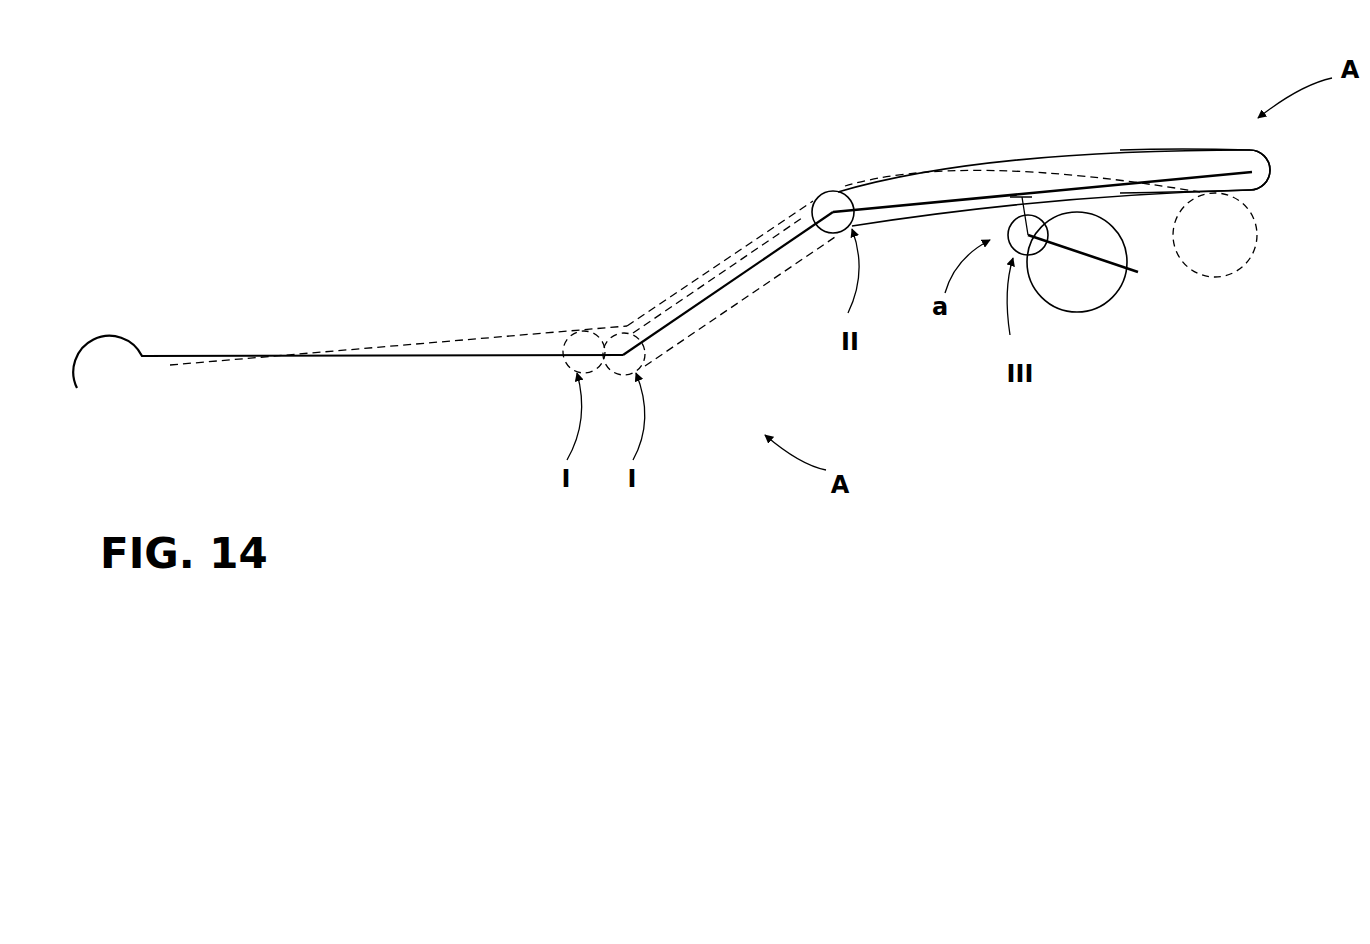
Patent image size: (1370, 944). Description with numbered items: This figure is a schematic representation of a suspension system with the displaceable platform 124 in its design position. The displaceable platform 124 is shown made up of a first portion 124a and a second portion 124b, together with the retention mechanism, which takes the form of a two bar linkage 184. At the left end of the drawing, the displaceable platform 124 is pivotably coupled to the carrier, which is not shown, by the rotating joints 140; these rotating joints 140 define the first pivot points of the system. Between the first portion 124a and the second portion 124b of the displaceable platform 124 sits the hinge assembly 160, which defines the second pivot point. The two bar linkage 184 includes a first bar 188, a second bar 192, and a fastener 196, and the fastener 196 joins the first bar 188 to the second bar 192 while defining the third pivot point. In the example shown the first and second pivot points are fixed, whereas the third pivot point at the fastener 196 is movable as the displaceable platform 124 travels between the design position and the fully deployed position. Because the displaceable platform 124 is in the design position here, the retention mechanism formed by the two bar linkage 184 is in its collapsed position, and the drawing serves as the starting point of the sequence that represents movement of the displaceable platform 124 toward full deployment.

The displaceable platform 124 is at (927, 170).
The first portion of the displaceable platform 124a is at (712, 270).
The second portion of the displaceable platform 124b is at (1170, 150).
The rotating joints 140 is at (582, 338).
The hinge assembly 160 is at (833, 212).
The two bar linkage 184 is at (1075, 268).
The first bar 188 is at (1139, 273).
The second bar 192 is at (1030, 214).
The fastener 196 is at (1030, 233).